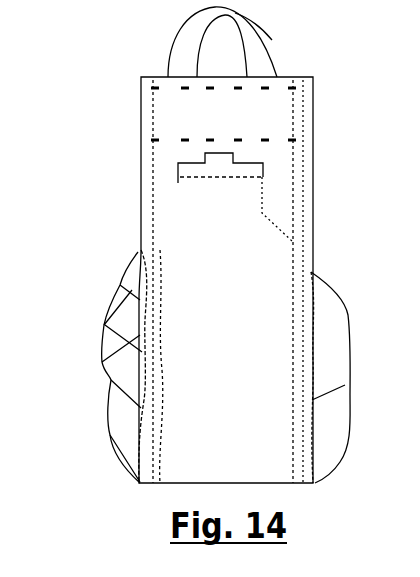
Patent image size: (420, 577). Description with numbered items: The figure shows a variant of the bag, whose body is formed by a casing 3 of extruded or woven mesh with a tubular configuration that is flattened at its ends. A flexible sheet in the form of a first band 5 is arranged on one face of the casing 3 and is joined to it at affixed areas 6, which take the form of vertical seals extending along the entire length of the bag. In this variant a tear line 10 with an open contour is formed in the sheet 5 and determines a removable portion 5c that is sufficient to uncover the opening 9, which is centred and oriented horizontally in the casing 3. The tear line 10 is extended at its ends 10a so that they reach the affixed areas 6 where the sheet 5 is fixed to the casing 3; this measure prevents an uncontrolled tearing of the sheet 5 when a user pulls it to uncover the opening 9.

The casing 3 is at (110, 381).
The first band 5 is at (210, 338).
The removable portion 5c is at (210, 197).
The affixed areas 6 is at (145, 282).
The opening 9 is at (187, 177).
The tear line 10 is at (180, 198).
The ends of the tear line 10a is at (300, 243).